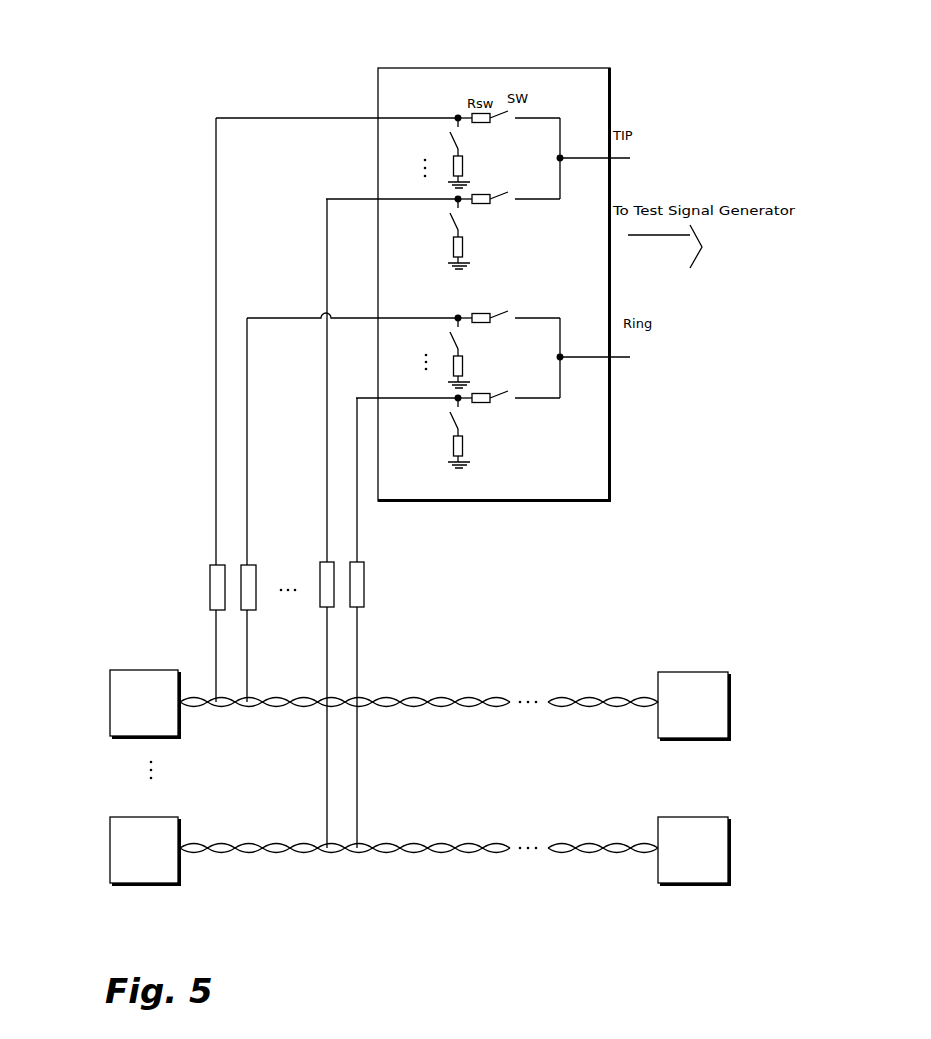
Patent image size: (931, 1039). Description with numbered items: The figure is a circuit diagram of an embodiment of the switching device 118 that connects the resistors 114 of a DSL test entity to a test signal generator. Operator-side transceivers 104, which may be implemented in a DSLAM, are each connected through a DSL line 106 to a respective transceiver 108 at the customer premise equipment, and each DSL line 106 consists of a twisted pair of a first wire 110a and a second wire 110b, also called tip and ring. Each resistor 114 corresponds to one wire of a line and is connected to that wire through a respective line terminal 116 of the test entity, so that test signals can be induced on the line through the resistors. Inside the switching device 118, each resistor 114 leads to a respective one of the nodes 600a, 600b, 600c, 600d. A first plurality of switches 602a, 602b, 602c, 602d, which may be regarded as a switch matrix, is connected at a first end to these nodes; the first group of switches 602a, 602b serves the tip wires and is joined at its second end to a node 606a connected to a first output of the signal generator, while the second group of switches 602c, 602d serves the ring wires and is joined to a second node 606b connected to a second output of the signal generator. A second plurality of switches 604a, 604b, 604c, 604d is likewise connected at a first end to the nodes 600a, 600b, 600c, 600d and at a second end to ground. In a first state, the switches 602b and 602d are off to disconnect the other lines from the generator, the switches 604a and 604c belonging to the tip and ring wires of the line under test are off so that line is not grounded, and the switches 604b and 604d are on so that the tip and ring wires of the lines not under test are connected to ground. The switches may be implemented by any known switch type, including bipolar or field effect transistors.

The switching device 118 is at (585, 483).
The node 600a is at (460, 122).
The node 600b is at (460, 203).
The node 600c is at (460, 322).
The node 600d is at (460, 402).
The switch of the first plurality of switches 602a is at (507, 120).
The switch of the first plurality of switches 602b is at (507, 201).
The switch of the first plurality of switches 602c is at (507, 320).
The switch of the first plurality of switches 602d is at (507, 400).
The switch of the second plurality of switches 604a is at (446, 143).
The switch of the second plurality of switches 604b is at (446, 220).
The switch of the second plurality of switches 604c is at (451, 342).
The switch of the second plurality of switches 604d is at (452, 420).
The node 606a is at (562, 158).
The node 606b is at (562, 358).
The resistors 114 is at (212, 582).
The line terminal 116 is at (223, 630).
The transceivers 104 is at (120, 672).
The transceivers 108 is at (712, 675).
The DSL line 106 is at (419, 808).
The first wire 110a is at (383, 707).
The second wire 110b is at (418, 707).